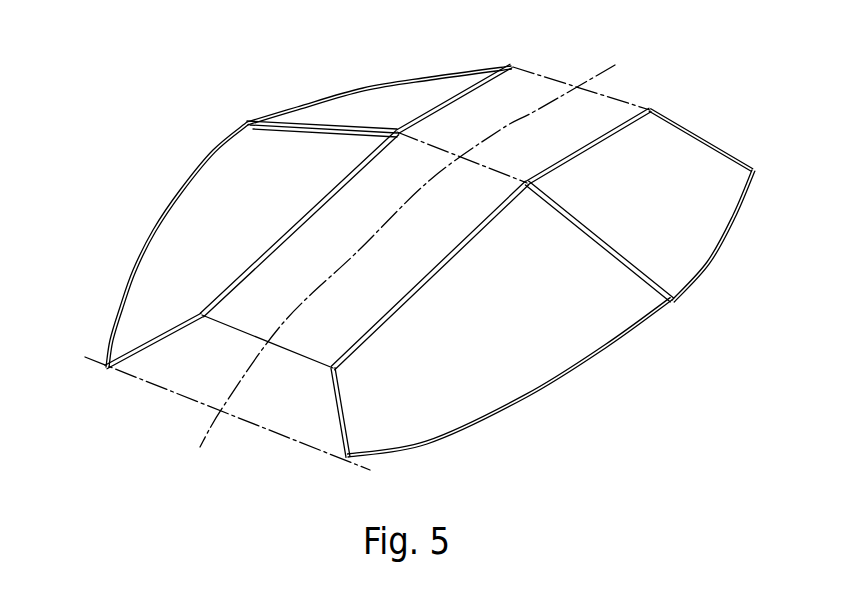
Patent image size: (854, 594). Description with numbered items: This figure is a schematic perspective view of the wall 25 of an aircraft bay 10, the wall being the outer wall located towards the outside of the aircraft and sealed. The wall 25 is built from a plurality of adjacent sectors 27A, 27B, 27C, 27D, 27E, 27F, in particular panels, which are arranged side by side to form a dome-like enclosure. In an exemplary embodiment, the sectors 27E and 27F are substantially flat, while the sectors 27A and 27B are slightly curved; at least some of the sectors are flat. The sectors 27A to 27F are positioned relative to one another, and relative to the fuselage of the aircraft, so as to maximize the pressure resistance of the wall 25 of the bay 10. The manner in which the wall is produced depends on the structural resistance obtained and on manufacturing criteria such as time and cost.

The bay 10 is at (130, 167).
The wall 25 is at (88, 274).
The sector 27A is at (697, 227).
The sector 27B is at (579, 327).
The sector 27C is at (367, 97).
The sector 27D is at (213, 178).
The sector 27E is at (600, 102).
The sector 27F is at (303, 340).